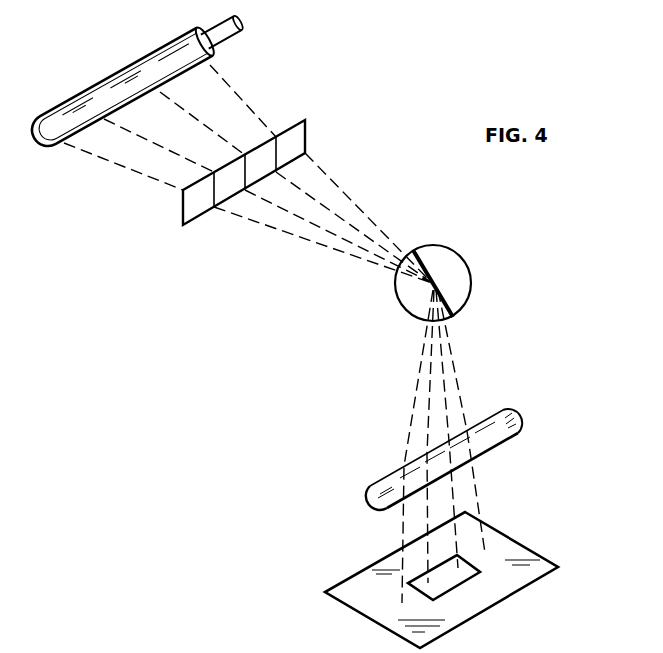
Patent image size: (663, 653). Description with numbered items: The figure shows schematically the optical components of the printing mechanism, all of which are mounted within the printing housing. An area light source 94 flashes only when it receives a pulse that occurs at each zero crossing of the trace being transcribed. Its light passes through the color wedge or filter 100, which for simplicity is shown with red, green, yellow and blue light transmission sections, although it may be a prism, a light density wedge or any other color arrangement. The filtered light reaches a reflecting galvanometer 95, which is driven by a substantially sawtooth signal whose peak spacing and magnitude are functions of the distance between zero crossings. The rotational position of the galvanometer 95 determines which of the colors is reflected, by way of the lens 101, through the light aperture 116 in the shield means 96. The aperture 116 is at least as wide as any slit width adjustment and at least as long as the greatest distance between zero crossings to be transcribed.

The area light source 94 is at (177, 50).
The color wedge or filter 100 is at (306, 124).
The reflecting galvanometer 95 is at (453, 252).
The lens 101 is at (512, 417).
The shield means 96 is at (511, 519).
The light aperture 116 is at (472, 578).